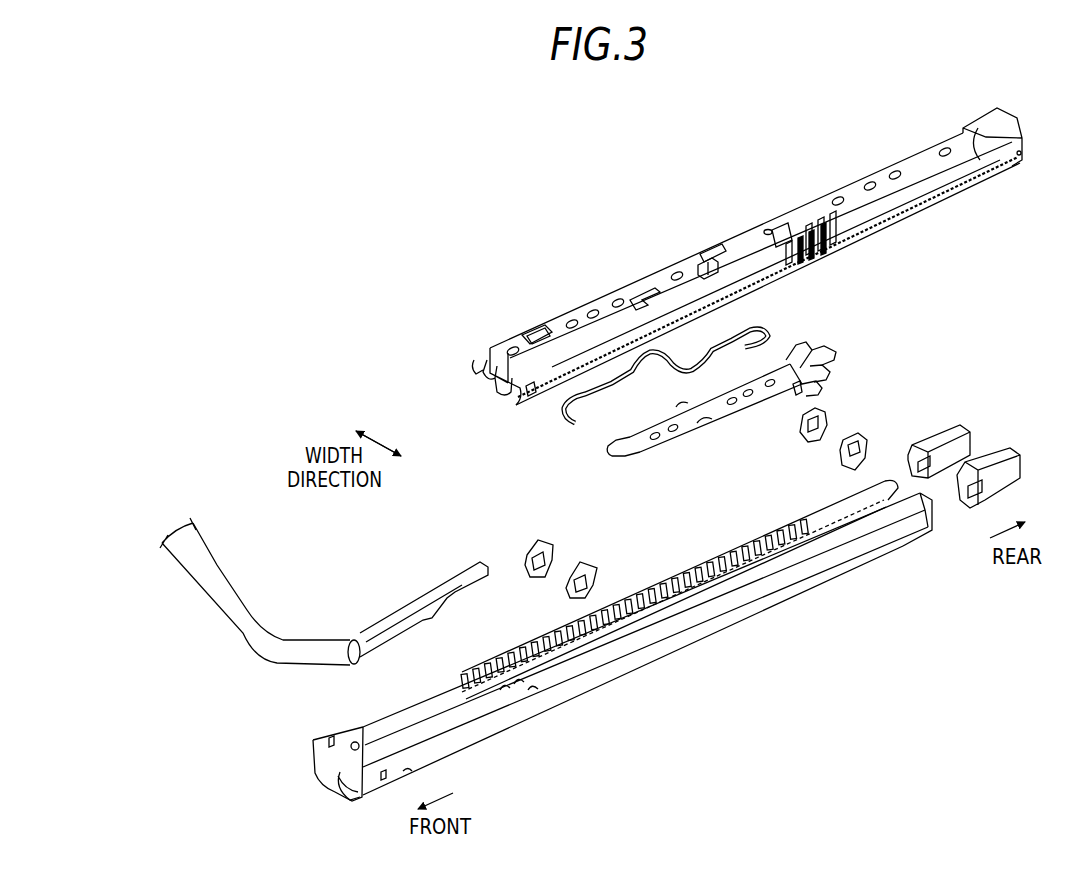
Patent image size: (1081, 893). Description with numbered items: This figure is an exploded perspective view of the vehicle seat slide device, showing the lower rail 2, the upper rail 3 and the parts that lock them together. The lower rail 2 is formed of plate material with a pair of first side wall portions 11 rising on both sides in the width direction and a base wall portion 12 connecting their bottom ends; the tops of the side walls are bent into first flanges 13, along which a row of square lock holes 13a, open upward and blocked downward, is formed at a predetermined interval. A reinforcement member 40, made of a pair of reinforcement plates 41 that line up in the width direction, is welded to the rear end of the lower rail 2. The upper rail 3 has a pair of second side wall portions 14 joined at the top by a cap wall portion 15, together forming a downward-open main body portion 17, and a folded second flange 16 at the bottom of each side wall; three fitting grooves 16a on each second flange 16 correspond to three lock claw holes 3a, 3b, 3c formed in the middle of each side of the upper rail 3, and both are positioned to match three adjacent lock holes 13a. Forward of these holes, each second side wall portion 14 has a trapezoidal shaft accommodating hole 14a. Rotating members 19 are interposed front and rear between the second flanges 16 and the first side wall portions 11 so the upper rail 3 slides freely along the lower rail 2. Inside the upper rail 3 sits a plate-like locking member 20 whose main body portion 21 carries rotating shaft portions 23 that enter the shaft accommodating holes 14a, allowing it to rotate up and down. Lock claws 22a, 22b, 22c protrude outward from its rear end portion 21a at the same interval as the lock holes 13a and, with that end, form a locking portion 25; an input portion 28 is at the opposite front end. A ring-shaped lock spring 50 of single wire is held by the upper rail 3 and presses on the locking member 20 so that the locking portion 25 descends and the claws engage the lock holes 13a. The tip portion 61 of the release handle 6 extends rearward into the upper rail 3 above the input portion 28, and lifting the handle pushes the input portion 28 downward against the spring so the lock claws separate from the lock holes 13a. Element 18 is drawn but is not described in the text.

The lower rail 2 is at (600, 659).
The upper rail 3 is at (900, 150).
The lock claw hole 3a is at (800, 230).
The lock claw hole 3b is at (812, 224).
The lock claw hole 3c is at (827, 215).
The release handle 6 is at (324, 591).
The first side wall portion 11 is at (312, 742).
The base wall portion 12 is at (322, 781).
The first flange 13 is at (630, 623).
The lock hole 13a is at (478, 676).
The second side wall portion 14 is at (500, 398).
The shaft accommodating hole 14a is at (703, 263).
The cap wall portion 15 is at (523, 340).
The second flange 16 is at (478, 366).
The fitting groove 16a is at (833, 240).
The main body portion 17 is at (766, 236).
The bracket 18 is at (777, 228).
The rotating member 19 is at (803, 432).
The locking member 20 is at (747, 417).
The main body portion 21 is at (740, 382).
The rear end portion 21a is at (797, 390).
The lock claw 22a is at (820, 394).
The lock claw 22b is at (830, 381).
The lock claw 22c is at (838, 370).
The rotating shaft portion 23 is at (678, 405).
The locking portion 25 is at (816, 352).
The input portion 28 is at (614, 458).
The reinforcement member 40 is at (979, 434).
The reinforcement plate 41 is at (1050, 422).
The lock spring 50 is at (600, 406).
The tip portion 61 is at (428, 600).